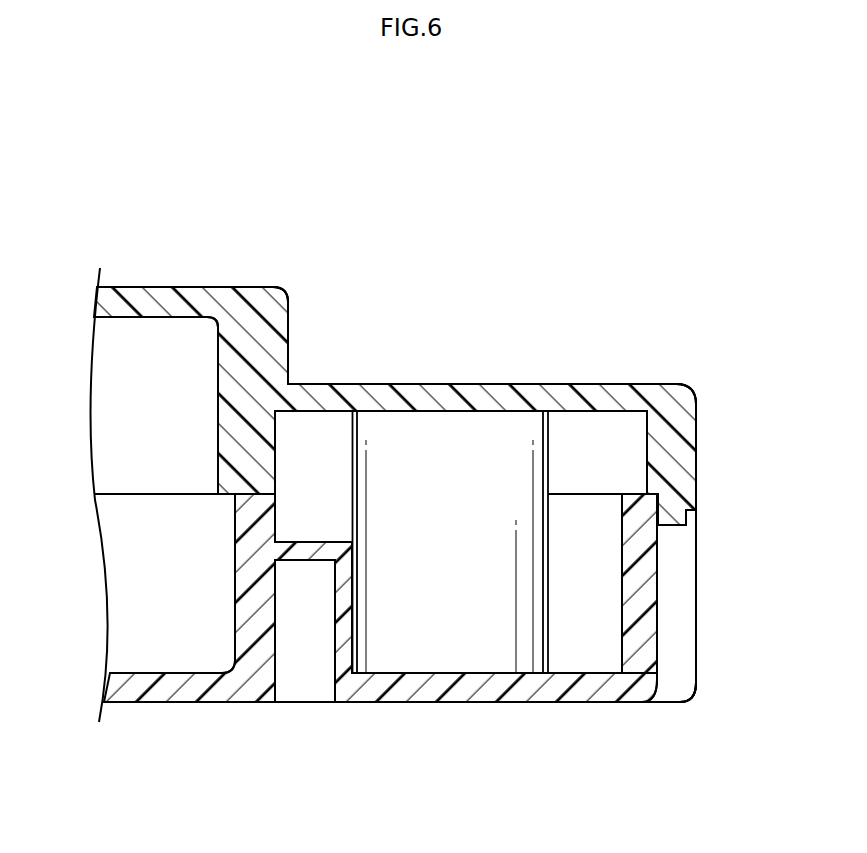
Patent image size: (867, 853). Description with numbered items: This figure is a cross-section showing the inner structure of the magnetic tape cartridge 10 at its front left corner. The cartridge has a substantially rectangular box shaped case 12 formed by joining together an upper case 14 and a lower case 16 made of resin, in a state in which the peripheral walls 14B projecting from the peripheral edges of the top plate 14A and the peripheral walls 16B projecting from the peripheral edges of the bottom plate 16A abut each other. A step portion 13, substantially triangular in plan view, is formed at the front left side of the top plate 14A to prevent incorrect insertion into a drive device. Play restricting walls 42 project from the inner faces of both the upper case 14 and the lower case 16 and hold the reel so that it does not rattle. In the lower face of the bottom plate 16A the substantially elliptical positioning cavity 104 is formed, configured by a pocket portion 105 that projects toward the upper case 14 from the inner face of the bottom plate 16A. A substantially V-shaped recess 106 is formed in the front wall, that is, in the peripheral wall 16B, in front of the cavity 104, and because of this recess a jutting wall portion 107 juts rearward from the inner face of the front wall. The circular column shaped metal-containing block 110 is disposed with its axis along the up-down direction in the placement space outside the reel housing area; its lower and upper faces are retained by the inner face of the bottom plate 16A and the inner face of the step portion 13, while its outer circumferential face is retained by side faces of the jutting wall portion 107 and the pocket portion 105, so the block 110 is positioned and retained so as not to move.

The magnetic tape cartridge 10 is at (553, 248).
The case 12 is at (396, 494).
The step portion 13 is at (463, 382).
The upper case 14 is at (194, 287).
The top plate 14A is at (124, 318).
The peripheral walls 14B is at (697, 438).
The lower case 16 is at (182, 706).
The bottom plate 16A is at (150, 672).
The peripheral walls 16B is at (696, 623).
The play restricting walls 42 is at (218, 410).
The positioning cavity 104 is at (303, 684).
The pocket portion 105 is at (313, 540).
The recess 106 is at (679, 588).
The jutting wall portion 107 is at (628, 493).
The metal-containing block 110 is at (549, 468).